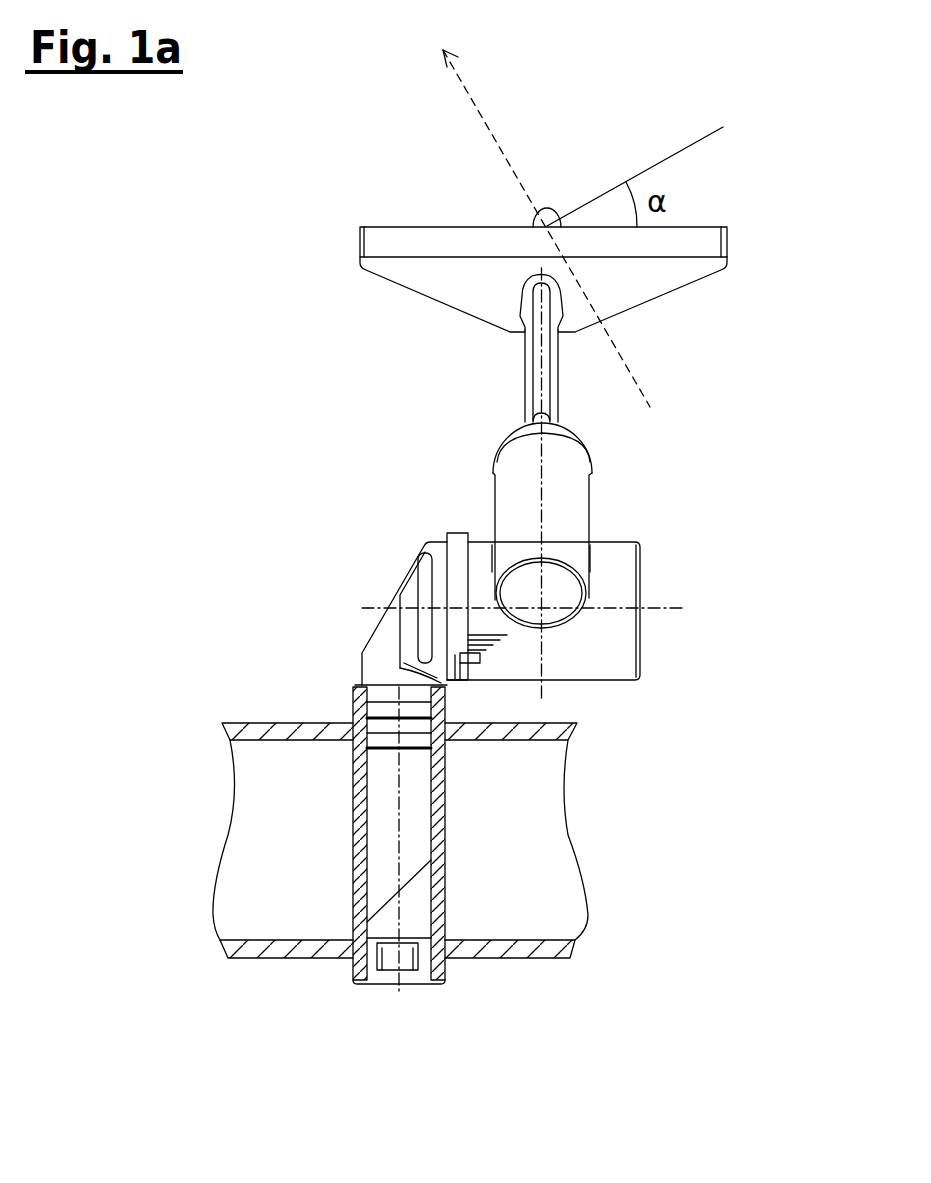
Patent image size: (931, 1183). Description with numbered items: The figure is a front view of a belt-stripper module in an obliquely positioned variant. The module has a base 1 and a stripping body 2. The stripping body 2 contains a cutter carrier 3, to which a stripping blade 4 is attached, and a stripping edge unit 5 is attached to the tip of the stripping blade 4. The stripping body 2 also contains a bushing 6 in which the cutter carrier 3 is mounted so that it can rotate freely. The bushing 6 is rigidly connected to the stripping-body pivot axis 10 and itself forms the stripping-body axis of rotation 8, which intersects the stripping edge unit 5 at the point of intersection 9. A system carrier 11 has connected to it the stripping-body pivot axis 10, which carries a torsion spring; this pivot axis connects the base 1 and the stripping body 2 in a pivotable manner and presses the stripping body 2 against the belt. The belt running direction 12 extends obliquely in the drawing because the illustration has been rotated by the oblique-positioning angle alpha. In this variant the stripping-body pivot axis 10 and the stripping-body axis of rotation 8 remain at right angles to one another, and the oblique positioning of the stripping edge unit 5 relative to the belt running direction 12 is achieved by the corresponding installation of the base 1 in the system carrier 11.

The base 1 is at (403, 815).
The stripping body 2 is at (537, 397).
The cutter carrier 3 is at (538, 379).
The stripping blade 4 is at (658, 278).
The stripping edge unit 5 is at (698, 242).
The bushing 6 is at (572, 492).
The stripping-body axis of rotation 8 is at (543, 473).
The point of intersection 9 is at (545, 226).
The stripping-body pivot axis 10 is at (683, 610).
The system carrier 11 is at (550, 733).
The belt running direction 12 is at (546, 228).